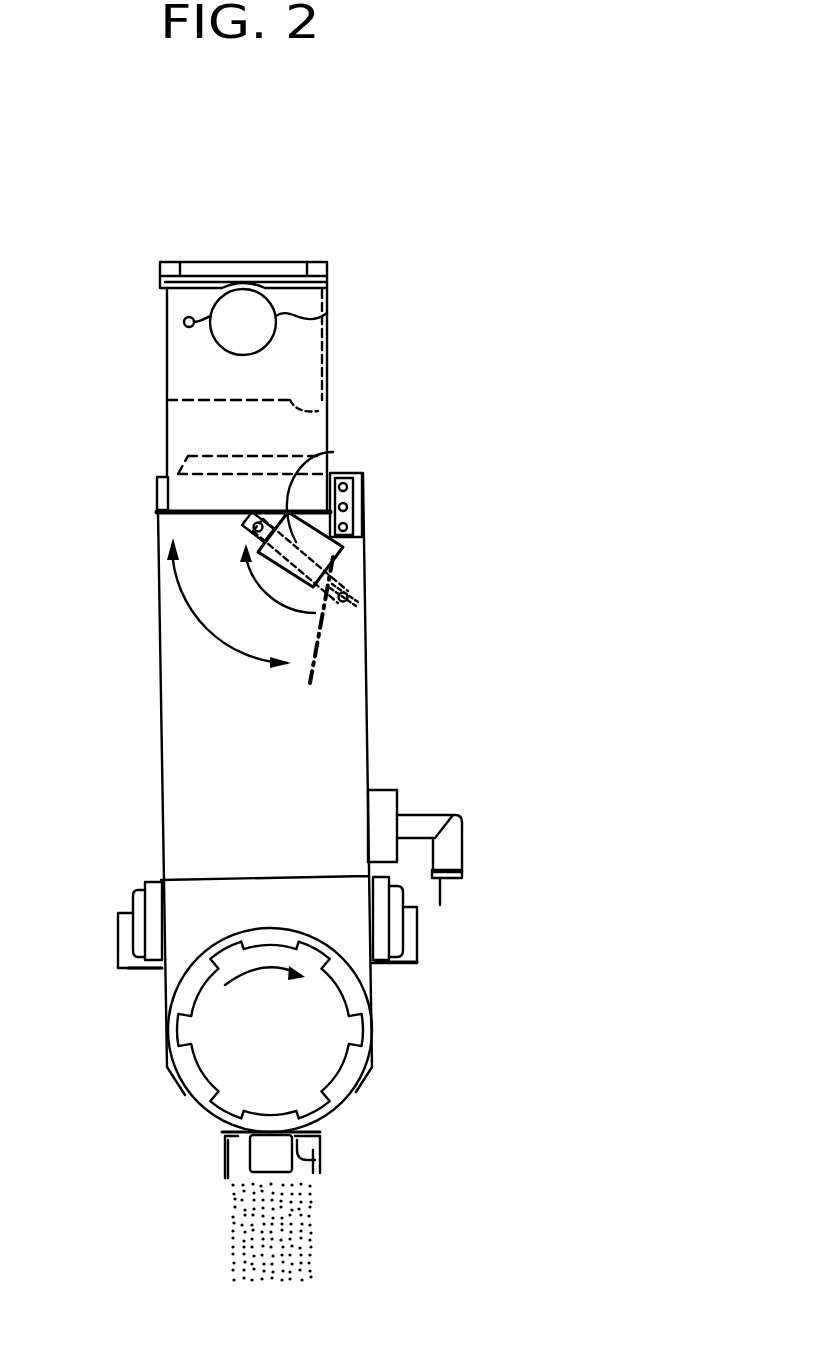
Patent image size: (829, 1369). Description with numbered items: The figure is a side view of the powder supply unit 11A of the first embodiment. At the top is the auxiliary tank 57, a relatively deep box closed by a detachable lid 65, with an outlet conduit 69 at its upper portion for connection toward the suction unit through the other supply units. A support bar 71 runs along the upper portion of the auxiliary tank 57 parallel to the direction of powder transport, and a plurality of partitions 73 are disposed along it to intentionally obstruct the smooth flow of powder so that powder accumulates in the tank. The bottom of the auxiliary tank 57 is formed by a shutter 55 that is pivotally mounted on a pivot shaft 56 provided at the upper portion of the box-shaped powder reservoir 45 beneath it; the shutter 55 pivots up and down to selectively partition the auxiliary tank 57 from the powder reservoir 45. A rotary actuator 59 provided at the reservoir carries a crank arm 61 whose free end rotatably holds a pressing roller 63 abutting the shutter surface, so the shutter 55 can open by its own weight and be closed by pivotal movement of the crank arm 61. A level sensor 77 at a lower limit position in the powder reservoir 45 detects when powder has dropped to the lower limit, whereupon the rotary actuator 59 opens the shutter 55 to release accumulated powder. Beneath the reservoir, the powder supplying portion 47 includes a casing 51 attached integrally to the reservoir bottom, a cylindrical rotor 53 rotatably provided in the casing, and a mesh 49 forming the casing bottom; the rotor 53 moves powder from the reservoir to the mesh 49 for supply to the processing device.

The powder supply unit 11A is at (352, 266).
The powder reservoir 45 is at (163, 712).
The powder supplying portion 47 is at (380, 1000).
The mesh 49 is at (320, 1158).
The casing 51 is at (175, 1086).
The cylindrical rotor 53 is at (347, 1075).
The shutter 55 is at (198, 517).
The pivot shaft 56 is at (362, 508).
The auxiliary tank 57 is at (167, 430).
The rotary actuator 59 is at (340, 545).
The crank arm 61 is at (333, 452).
The pressing roller 63 is at (248, 530).
The lid 65 is at (283, 262).
The outlet conduit 69 is at (327, 313).
The support bar 71 is at (184, 322).
The partitions 73 is at (318, 411).
The level sensor 77 is at (385, 803).